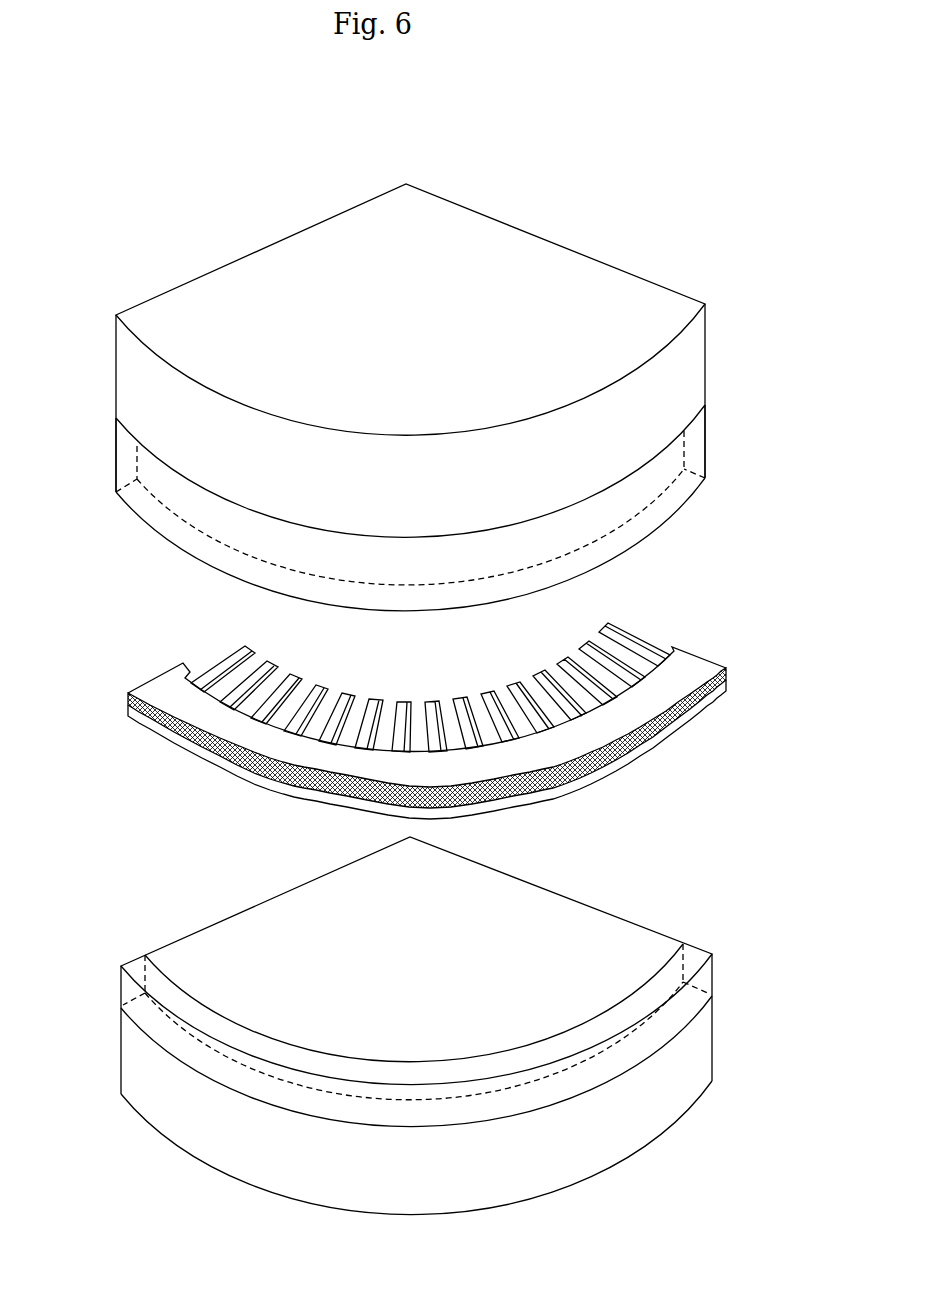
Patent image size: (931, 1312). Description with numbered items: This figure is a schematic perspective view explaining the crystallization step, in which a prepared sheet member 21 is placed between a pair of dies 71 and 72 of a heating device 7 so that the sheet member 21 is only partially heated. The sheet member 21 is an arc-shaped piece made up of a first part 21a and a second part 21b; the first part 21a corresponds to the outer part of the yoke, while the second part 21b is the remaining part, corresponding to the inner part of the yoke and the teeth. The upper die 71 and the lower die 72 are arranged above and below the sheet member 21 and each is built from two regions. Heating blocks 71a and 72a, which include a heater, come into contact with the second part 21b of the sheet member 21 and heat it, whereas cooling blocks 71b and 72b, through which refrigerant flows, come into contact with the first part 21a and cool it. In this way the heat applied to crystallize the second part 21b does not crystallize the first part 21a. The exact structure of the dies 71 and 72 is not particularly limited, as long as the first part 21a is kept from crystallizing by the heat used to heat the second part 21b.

The heating device 7 is at (100, 254).
The die 71 is at (560, 262).
The heating block 71a is at (652, 505).
The cooling block 71b is at (705, 440).
The sheet member 21 is at (766, 723).
The first part 21a is at (650, 748).
The second part 21b is at (640, 713).
The die 72 is at (705, 1053).
The heating block 72a is at (595, 930).
The cooling block 72b is at (693, 993).